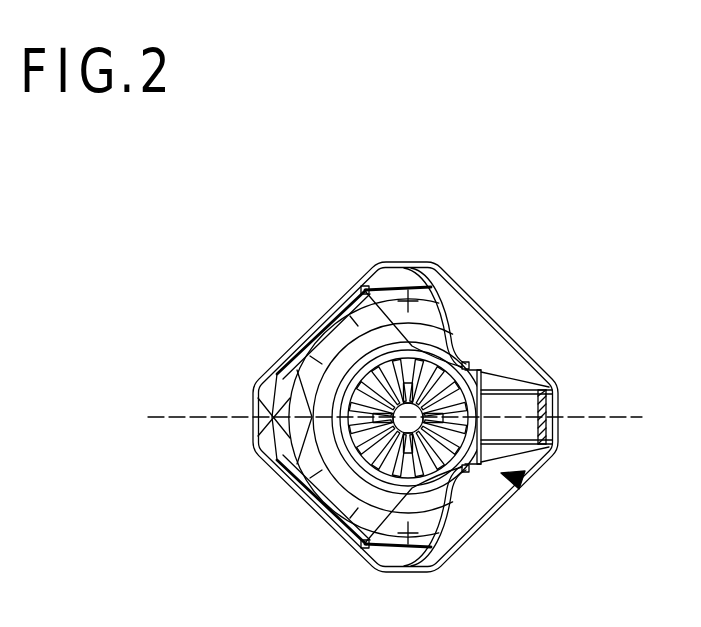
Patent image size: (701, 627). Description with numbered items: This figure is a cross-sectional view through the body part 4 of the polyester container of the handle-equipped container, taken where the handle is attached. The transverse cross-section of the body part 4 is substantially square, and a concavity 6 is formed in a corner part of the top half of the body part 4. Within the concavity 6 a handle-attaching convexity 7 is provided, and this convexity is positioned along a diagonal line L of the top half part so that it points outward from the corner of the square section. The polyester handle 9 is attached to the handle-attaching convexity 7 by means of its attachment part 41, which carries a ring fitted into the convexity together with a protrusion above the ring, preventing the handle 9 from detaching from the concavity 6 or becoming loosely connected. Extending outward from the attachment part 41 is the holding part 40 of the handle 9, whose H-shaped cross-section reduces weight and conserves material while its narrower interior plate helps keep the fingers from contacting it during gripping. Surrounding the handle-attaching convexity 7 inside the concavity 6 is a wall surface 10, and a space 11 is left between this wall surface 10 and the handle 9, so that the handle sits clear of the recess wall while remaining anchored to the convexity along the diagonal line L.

The body part 4 is at (318, 322).
The wall surface 10 is at (366, 287).
The space 11 is at (461, 358).
The attachment part 41 is at (463, 363).
The handle-attaching convexity 7 is at (488, 390).
The holding part 40 is at (559, 412).
The polyester handle 9 is at (562, 441).
The concavity 6 is at (522, 482).
The diagonal line L is at (203, 416).